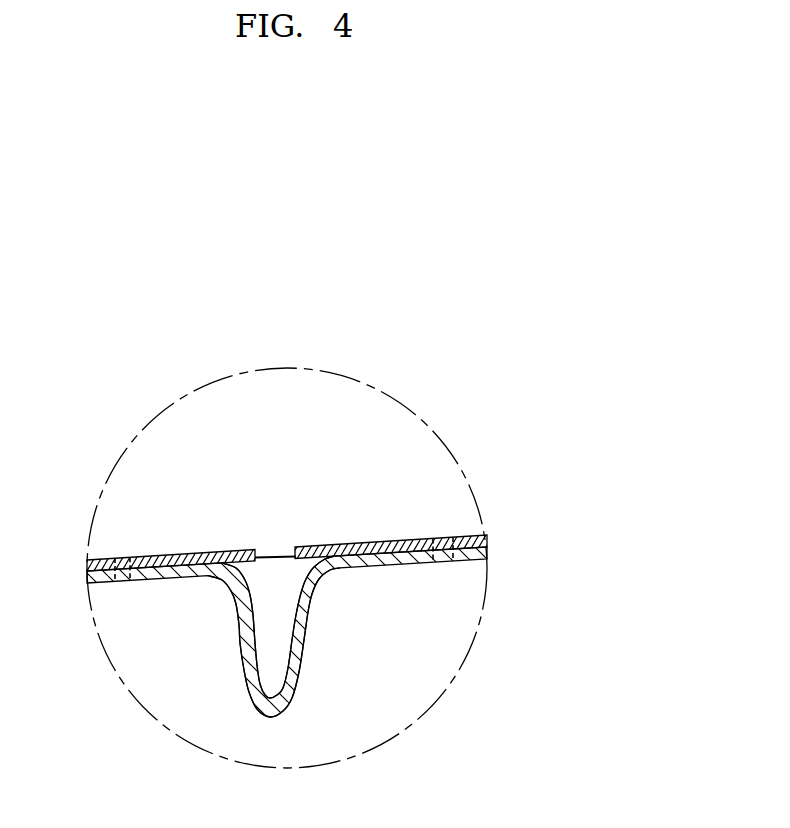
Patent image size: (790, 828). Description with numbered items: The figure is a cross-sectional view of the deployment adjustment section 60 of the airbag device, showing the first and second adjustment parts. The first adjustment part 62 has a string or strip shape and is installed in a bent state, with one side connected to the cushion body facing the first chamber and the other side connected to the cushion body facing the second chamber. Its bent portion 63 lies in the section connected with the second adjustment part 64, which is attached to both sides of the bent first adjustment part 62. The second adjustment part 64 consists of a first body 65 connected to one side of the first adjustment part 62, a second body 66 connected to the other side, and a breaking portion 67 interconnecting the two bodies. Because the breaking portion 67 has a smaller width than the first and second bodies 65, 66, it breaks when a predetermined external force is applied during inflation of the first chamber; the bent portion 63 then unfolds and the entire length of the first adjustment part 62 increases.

The deployment adjustment section 60 is at (130, 510).
The first adjustment part 62 is at (105, 582).
The bent portion 63 is at (302, 660).
The second adjustment part 64 is at (363, 324).
The first body 65 is at (177, 554).
The second body 66 is at (375, 542).
The breaking portion 67 is at (279, 556).